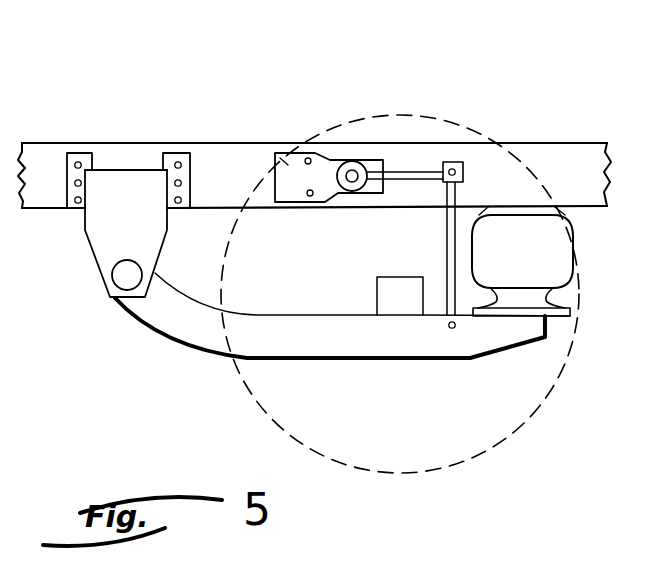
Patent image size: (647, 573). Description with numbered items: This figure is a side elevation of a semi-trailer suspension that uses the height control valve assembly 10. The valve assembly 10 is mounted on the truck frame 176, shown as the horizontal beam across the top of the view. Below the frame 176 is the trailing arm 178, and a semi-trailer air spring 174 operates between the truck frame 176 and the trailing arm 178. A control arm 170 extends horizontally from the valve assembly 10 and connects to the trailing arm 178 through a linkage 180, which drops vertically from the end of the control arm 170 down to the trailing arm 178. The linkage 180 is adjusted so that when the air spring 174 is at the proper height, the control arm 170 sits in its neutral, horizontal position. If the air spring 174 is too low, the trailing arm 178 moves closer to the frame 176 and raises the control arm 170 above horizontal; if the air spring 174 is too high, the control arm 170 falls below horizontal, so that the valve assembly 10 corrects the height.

The height control valve assembly 10 is at (339, 138).
The control arm 170 is at (410, 172).
The semi-trailer air spring 174 is at (562, 252).
The truck frame 176 is at (232, 145).
The trailing arm 178 is at (183, 328).
The linkage 180 is at (458, 196).